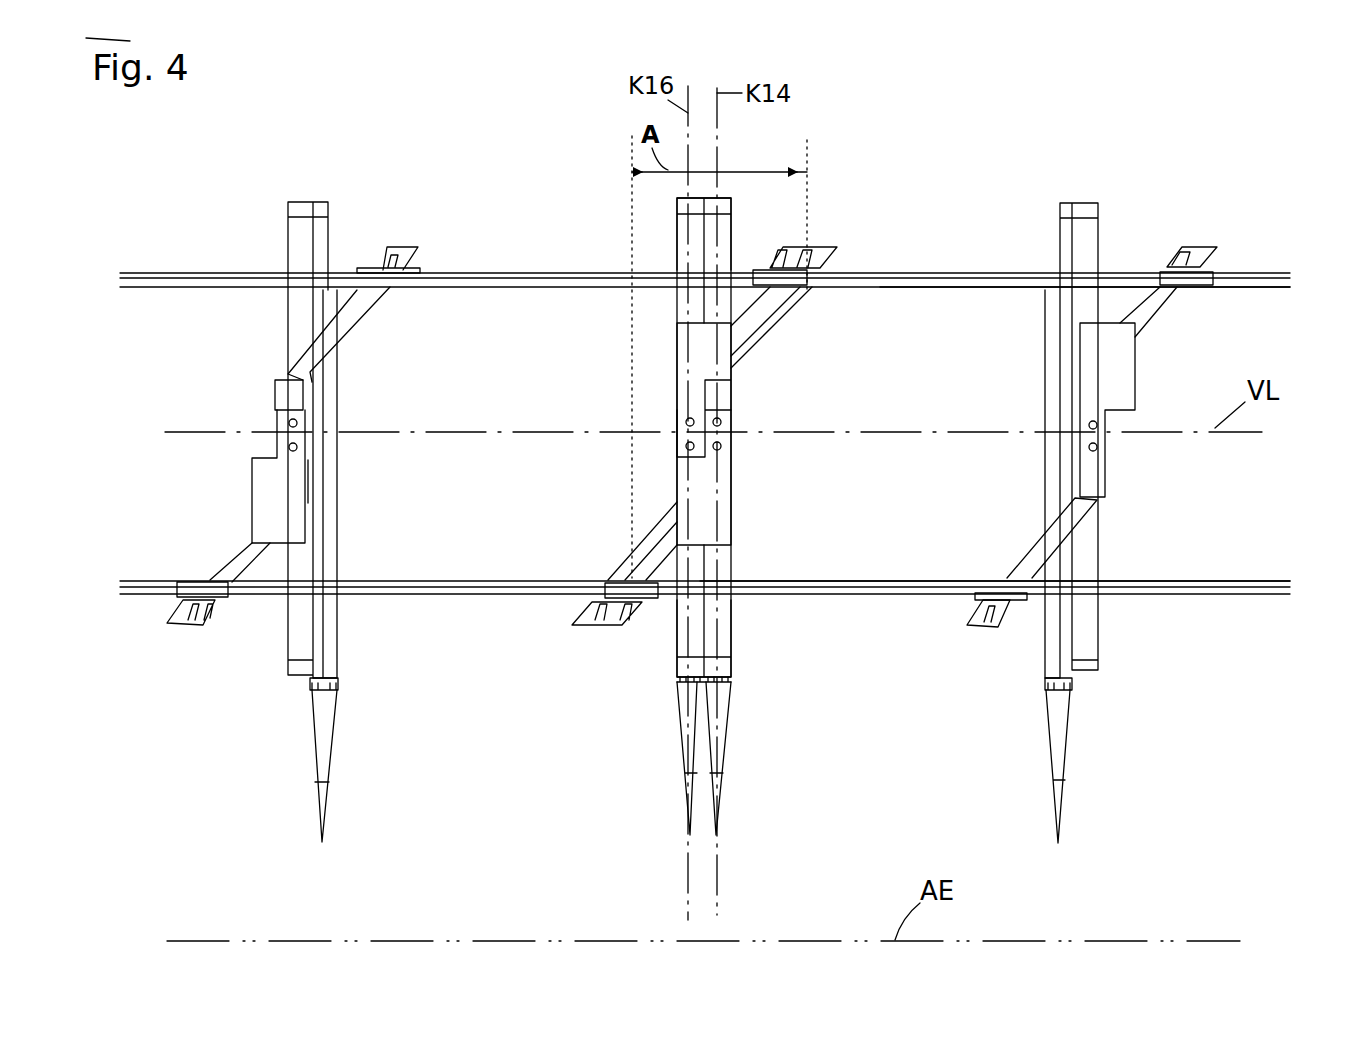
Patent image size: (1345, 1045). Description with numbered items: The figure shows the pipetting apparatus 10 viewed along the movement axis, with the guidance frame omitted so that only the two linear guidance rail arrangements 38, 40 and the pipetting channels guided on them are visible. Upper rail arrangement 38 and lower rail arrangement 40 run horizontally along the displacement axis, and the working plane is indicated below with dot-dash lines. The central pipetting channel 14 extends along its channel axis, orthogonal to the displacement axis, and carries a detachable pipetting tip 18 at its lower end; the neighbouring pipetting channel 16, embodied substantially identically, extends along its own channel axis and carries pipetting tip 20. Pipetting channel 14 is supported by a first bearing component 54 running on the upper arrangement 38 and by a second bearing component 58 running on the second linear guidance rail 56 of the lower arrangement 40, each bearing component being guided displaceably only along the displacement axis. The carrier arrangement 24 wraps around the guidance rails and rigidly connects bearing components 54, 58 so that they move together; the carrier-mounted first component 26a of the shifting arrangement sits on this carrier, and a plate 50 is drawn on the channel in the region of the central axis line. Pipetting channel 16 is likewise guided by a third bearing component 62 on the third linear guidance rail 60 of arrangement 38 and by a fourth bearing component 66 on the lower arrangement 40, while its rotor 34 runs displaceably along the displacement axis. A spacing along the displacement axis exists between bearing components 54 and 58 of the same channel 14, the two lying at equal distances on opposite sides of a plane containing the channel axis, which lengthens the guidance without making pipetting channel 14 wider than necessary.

The pipetting apparatus 10 is at (1242, 148).
The pipetting channel 14 is at (718, 625).
The pipetting channel 16 is at (687, 635).
The pipetting tip 18 is at (722, 735).
The pipetting tip 20 is at (688, 752).
The carrier component 24 is at (772, 336).
The first component 26a is at (717, 230).
The rotor 34 is at (688, 350).
The linear guidance rail arrangement 38 is at (970, 262).
The linear guidance rail arrangement 40 is at (872, 614).
The connecting plate 50 is at (715, 511).
The bearing component 54 is at (835, 268).
The second linear guidance rail 56 is at (875, 582).
The second bearing component 58 is at (648, 598).
The third linear guidance rail 60 is at (927, 290).
The third bearing component 62 is at (762, 270).
The fourth bearing component 66 is at (585, 605).